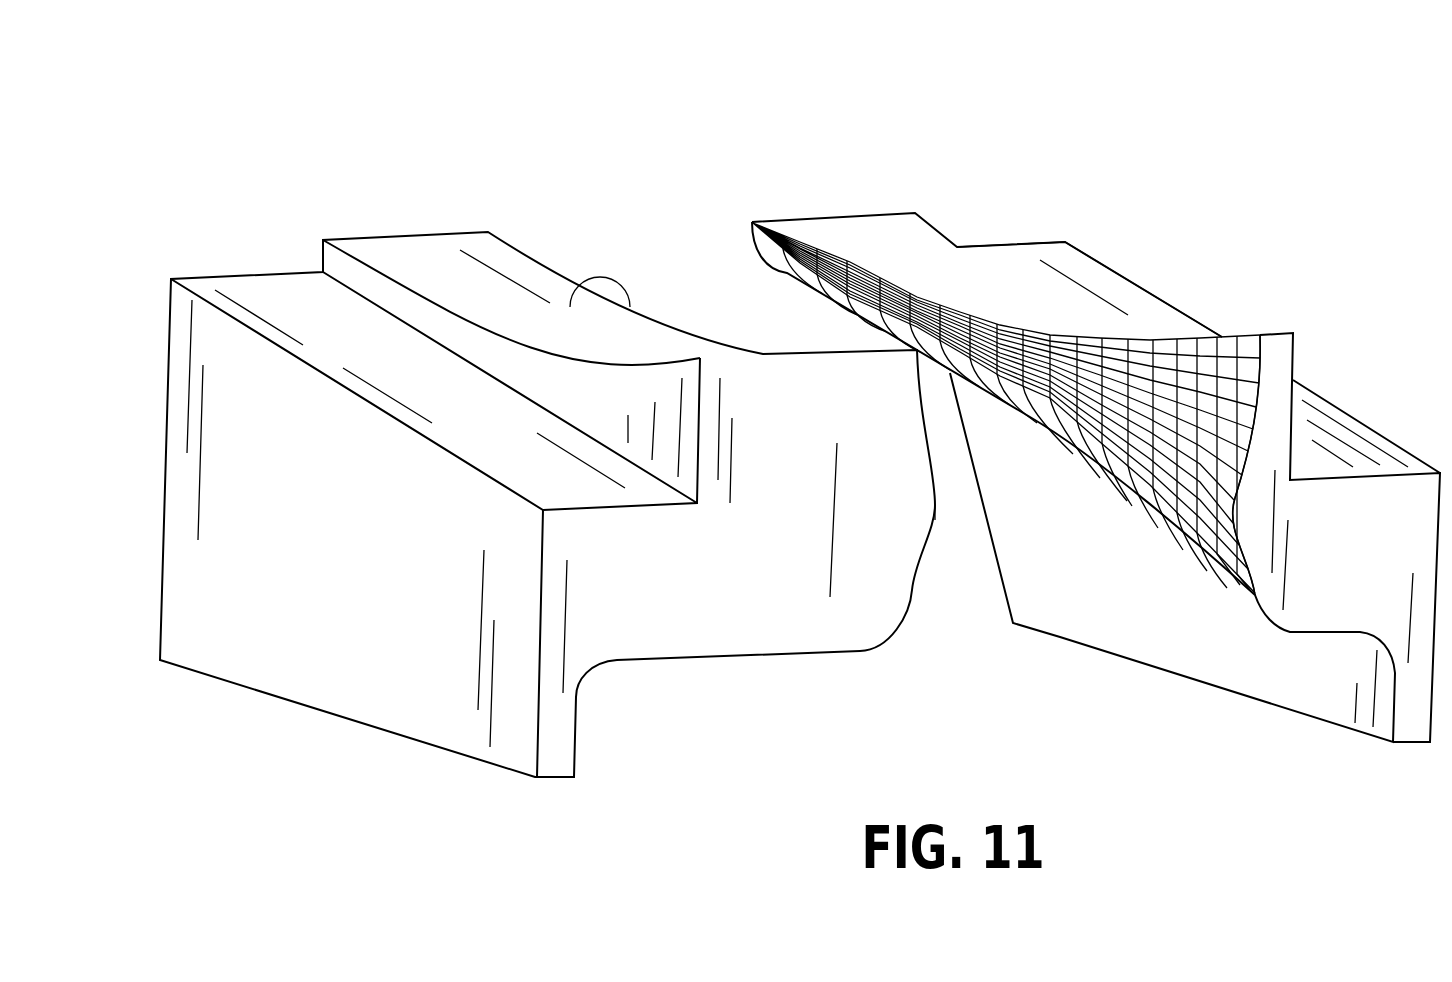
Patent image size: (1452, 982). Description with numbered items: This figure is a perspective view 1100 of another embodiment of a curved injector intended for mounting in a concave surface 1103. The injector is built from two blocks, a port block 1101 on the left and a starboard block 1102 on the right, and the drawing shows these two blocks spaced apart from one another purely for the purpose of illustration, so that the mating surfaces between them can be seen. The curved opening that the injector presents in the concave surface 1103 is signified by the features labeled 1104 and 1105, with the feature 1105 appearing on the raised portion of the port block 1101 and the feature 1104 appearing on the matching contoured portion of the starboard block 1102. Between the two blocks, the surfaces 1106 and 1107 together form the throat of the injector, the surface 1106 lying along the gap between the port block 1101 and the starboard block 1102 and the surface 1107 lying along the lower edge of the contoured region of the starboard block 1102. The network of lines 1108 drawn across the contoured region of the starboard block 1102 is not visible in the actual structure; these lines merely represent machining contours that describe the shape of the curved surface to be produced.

The perspective view 1100 is at (972, 170).
The port block 1101 is at (394, 258).
The starboard block 1102 is at (845, 240).
The concave surface 1103 is at (1068, 330).
The curved opening 1104 is at (983, 312).
The curved opening 1105 is at (586, 316).
The throat surface 1106 is at (937, 523).
The throat surface 1107 is at (1233, 497).
The machining contour lines 1108 is at (1148, 402).